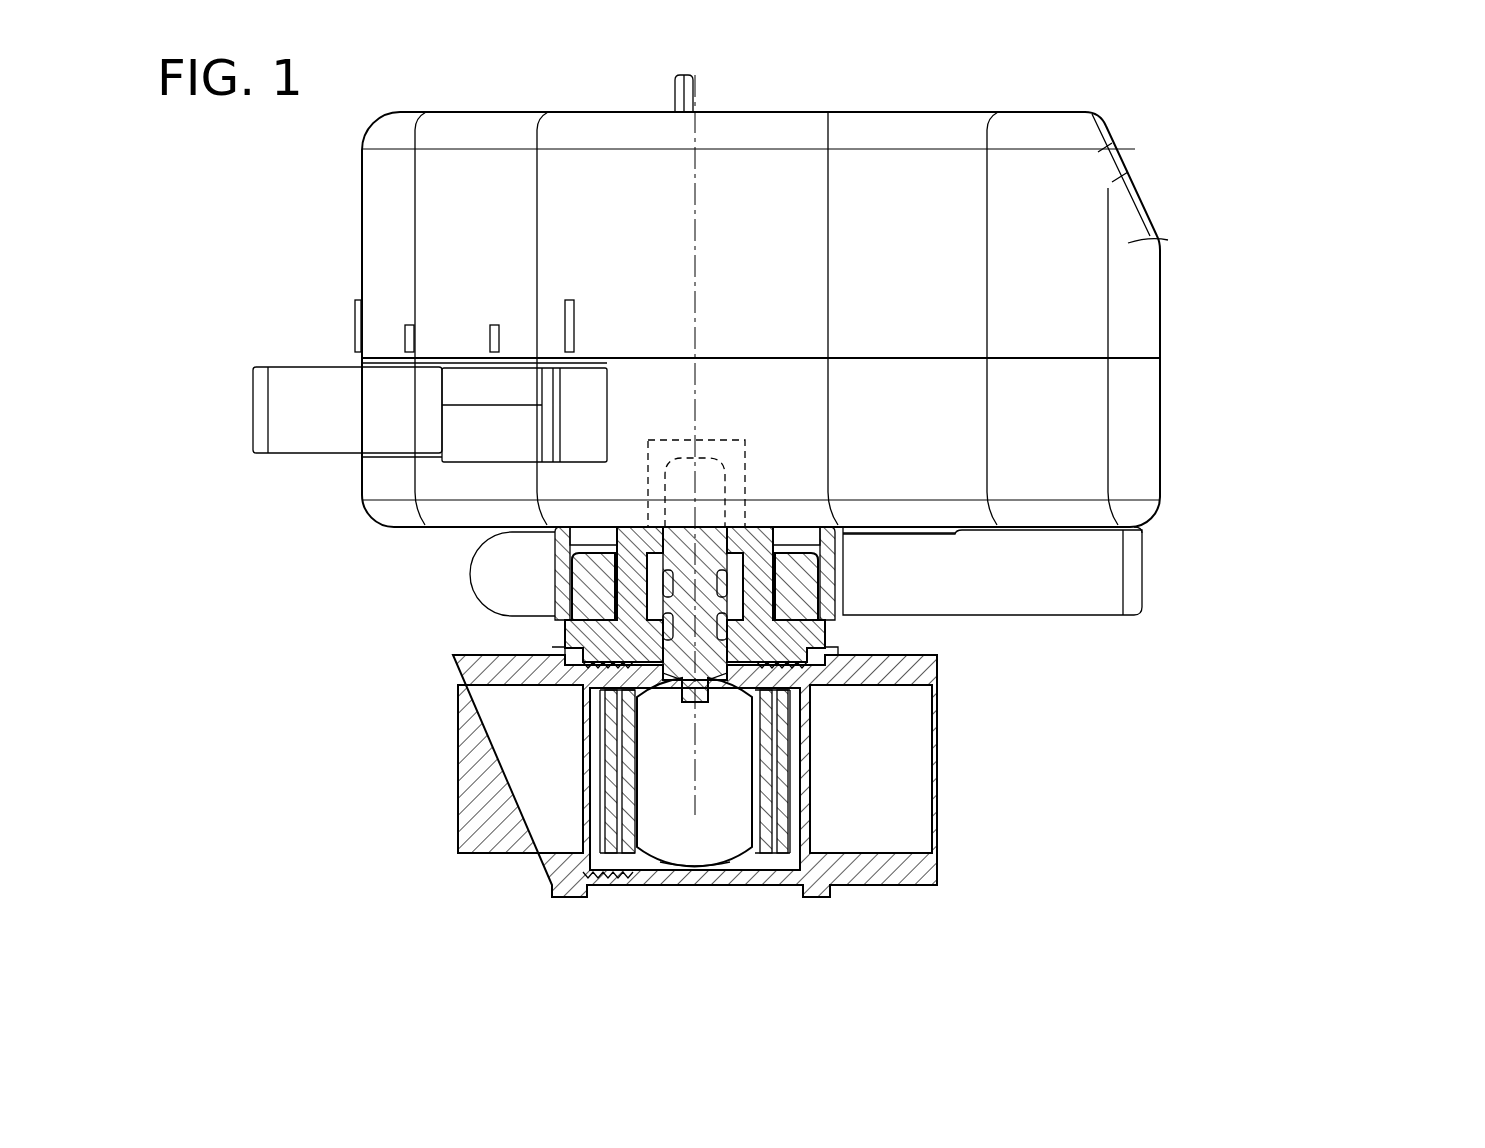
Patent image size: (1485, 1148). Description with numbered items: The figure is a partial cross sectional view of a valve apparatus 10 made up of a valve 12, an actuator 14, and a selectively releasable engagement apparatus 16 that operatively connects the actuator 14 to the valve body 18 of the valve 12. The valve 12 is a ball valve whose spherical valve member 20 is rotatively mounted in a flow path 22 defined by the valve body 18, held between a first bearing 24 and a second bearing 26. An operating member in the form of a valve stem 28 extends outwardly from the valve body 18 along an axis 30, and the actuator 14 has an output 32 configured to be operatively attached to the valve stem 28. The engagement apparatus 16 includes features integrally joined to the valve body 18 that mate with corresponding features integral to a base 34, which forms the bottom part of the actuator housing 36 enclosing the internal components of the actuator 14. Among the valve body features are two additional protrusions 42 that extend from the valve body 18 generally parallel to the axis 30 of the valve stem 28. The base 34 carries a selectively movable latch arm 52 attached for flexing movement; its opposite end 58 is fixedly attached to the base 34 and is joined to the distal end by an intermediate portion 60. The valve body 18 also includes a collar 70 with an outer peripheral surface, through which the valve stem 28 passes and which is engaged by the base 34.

The valve apparatus 10 is at (1313, 318).
The valve 12 is at (937, 660).
The actuator 14 is at (390, 218).
The selectively releasable engagement apparatus 16 is at (435, 633).
The valve body 18 is at (937, 685).
The spherical valve member 20 is at (730, 882).
The flow path 22 is at (977, 781).
The first bearing 24 is at (620, 882).
The second bearing 26 is at (785, 882).
The valve stem 28 is at (692, 639).
The axis 30 is at (697, 747).
The output 32 is at (747, 510).
The base 34 is at (1132, 442).
The actuator housing 36 is at (1132, 243).
The additional protrusion 42 is at (587, 582).
The latch arm 52 is at (1103, 578).
The opposite end 58 is at (1133, 542).
The intermediate portion 60 is at (1038, 587).
The collar 70 is at (750, 570).